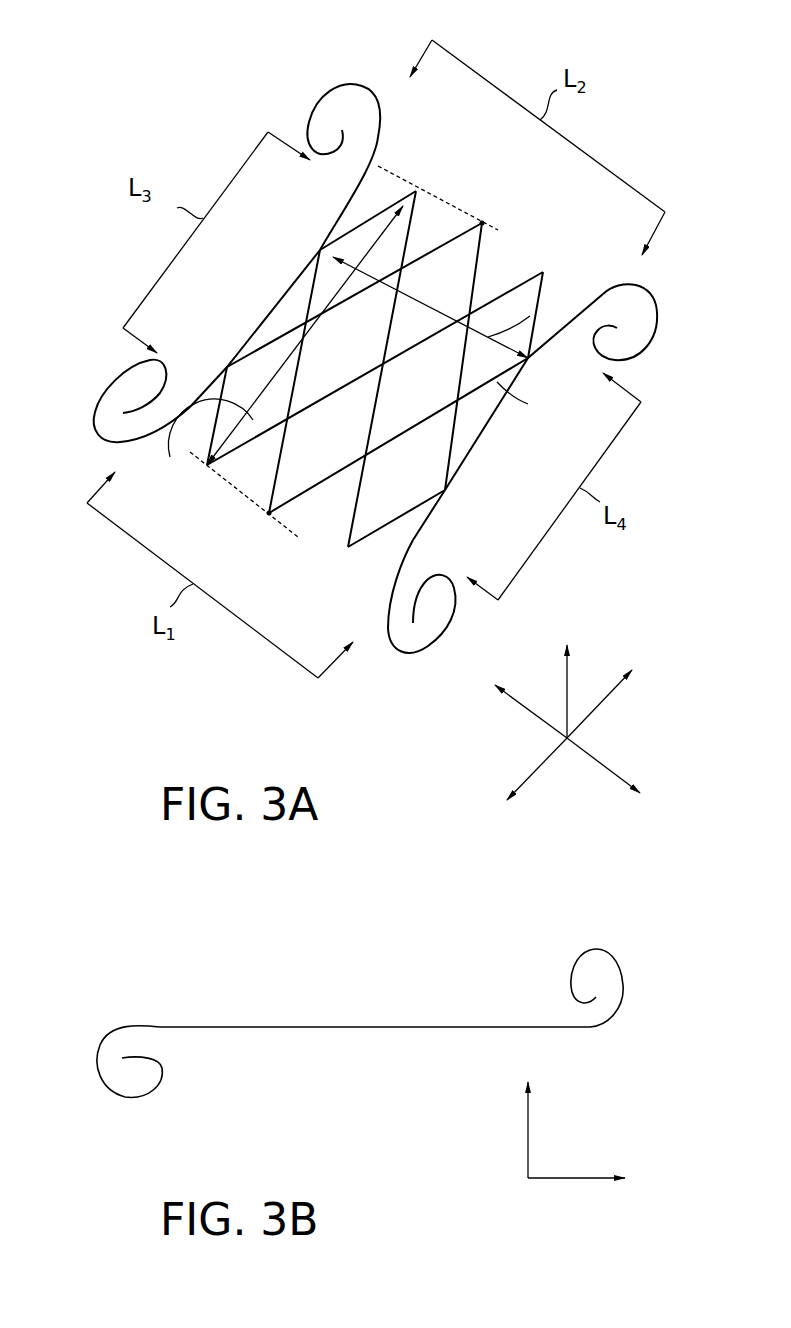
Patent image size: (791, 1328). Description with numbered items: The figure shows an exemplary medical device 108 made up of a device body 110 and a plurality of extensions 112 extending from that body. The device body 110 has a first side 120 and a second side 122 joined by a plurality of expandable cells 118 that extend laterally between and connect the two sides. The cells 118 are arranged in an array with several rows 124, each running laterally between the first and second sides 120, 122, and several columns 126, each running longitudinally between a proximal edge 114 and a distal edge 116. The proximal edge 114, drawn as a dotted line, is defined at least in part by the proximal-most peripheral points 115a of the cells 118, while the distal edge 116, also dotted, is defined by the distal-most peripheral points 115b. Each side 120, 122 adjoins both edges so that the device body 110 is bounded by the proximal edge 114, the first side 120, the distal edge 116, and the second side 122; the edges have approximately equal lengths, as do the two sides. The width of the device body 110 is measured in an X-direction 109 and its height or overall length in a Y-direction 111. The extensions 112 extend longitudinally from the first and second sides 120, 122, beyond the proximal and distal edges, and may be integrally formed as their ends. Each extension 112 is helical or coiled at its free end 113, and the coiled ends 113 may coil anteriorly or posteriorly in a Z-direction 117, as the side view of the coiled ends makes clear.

In FIG. 3A, the medical device 108 is at (295, 87).
In FIG. 3A, the X-direction 109 is at (527, 713).
In FIG. 3A, the device body 110 is at (512, 240).
In FIG. 3A, the Y-direction 111 is at (593, 715).
In FIG. 3B, the Y-direction 111 is at (563, 1180).
In FIG. 3A, the extensions 112 is at (344, 86).
In FIG. 3B, the extensions 112 is at (603, 948).
In FIG. 3A, the free ends 113 is at (620, 336).
In FIG. 3B, the free ends 113 is at (117, 1077).
In FIG. 3A, the proximal edge 114 is at (245, 508).
In FIG. 3A, the proximal-most peripheral points 115a is at (276, 523).
In FIG. 3A, the distal-most peripheral points 115b is at (481, 222).
In FIG. 3A, the distal edge 116 is at (449, 190).
In FIG. 3A, the Z-direction 117 is at (568, 682).
In FIG. 3B, the Z-direction 117 is at (527, 1142).
In FIG. 3A, the expandable cells 118 is at (490, 387).
In FIG. 3A, the first side 120 is at (270, 316).
In FIG. 3A, the second side 122 is at (479, 430).
In FIG. 3A, the rows 124 is at (530, 356).
In FIG. 3A, the columns 126 is at (170, 457).